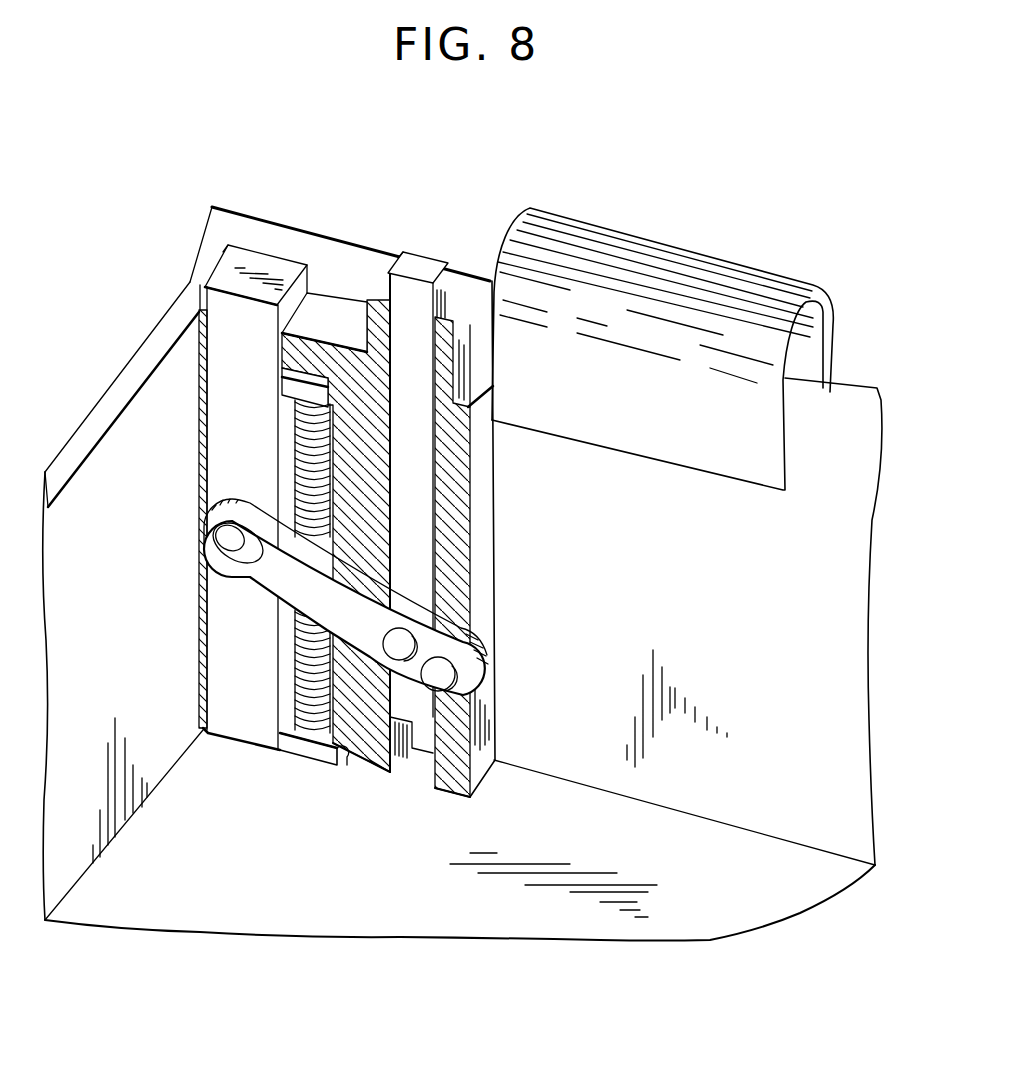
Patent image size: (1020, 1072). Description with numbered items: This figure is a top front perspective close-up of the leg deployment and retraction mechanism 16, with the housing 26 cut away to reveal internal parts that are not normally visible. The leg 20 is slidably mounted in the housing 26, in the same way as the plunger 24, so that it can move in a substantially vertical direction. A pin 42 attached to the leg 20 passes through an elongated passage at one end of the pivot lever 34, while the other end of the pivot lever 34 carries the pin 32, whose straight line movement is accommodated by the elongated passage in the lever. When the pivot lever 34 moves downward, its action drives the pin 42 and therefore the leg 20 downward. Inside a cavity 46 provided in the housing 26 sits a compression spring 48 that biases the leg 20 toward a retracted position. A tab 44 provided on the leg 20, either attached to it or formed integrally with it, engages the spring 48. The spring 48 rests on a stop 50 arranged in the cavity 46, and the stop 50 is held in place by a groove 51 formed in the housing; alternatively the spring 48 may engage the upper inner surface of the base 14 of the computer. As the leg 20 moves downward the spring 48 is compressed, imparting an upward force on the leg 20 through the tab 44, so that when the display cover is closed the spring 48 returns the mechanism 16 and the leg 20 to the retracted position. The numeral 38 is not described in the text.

The base 14 is at (125, 386).
The leg deployment and retraction mechanism 16 is at (598, 598).
The leg 20 is at (216, 669).
The plunger 24 is at (445, 316).
The housing 26 is at (482, 533).
The pin 32 is at (403, 644).
The pivot lever 34 is at (470, 668).
The pin 38 is at (441, 676).
The pin 42 is at (229, 539).
The tab 44 is at (312, 388).
The cavity 46 is at (290, 443).
The spring 48 is at (300, 668).
The stop 50 is at (303, 745).
The groove 51 is at (339, 753).